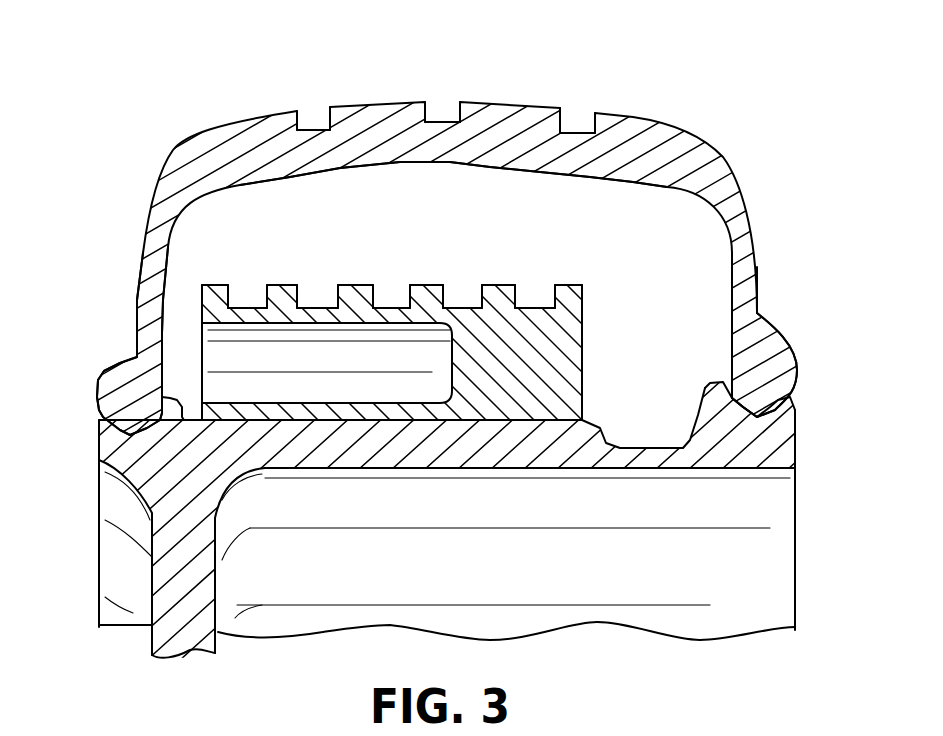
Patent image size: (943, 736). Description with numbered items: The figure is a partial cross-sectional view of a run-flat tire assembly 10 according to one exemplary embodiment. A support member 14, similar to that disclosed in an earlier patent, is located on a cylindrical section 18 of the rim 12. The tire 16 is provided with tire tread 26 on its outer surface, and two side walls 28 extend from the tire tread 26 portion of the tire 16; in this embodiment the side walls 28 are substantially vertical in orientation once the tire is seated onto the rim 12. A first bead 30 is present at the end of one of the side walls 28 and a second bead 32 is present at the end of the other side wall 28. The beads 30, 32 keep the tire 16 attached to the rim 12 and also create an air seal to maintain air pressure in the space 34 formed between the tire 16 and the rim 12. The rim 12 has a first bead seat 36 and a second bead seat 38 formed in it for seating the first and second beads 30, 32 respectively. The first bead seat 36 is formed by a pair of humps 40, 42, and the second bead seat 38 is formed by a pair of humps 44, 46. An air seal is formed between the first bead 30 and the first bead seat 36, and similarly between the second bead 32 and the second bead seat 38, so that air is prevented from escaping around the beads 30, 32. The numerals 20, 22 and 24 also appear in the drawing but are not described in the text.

The tire assembly 10 is at (700, 105).
The rim 12 is at (550, 448).
The support member 14 is at (582, 302).
The tire 16 is at (165, 168).
The cylindrical section 18 is at (308, 445).
The ribs 20 is at (495, 293).
The sleeve 22 is at (330, 370).
The groove 24 is at (600, 412).
The tire tread 26 is at (460, 117).
The side walls 28 is at (137, 272).
The first bead 30 is at (115, 378).
The second bead 32 is at (793, 347).
The space 34 is at (428, 255).
The first bead seat 36 is at (99, 425).
The second bead seat 38 is at (797, 437).
The hump 40 is at (180, 397).
The hump 42 is at (100, 418).
The hump 44 is at (713, 387).
The hump 46 is at (797, 407).